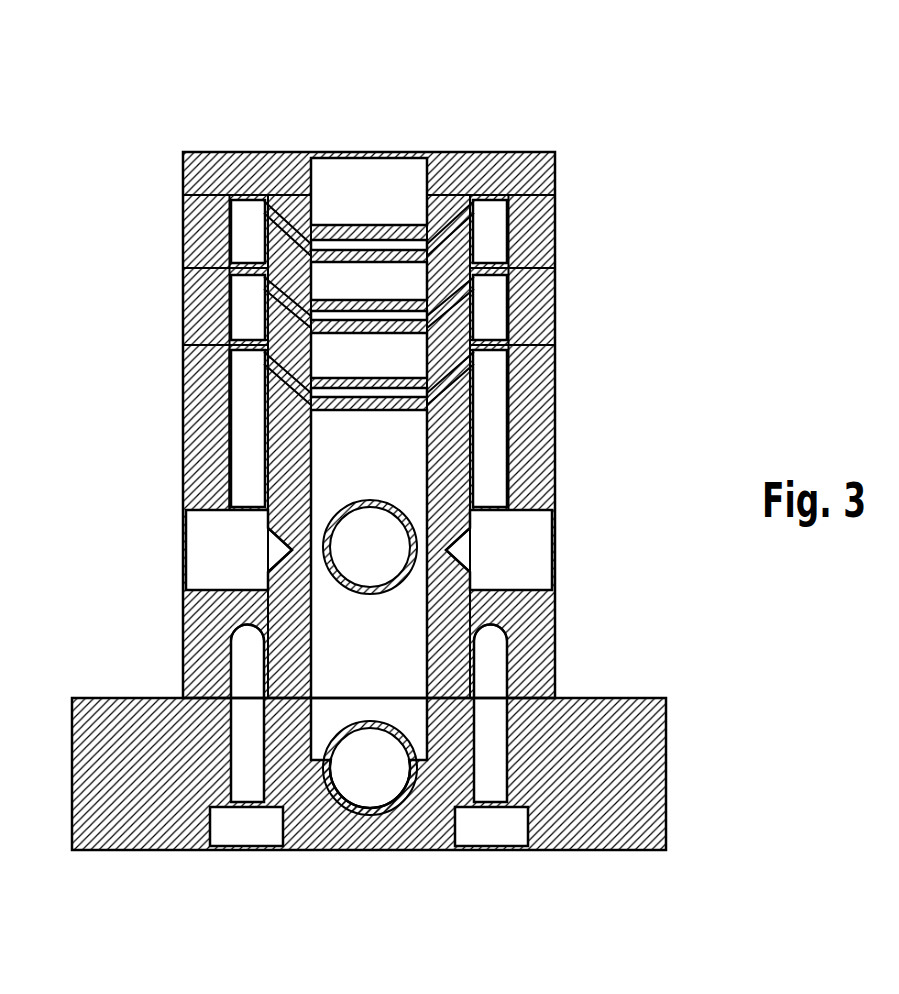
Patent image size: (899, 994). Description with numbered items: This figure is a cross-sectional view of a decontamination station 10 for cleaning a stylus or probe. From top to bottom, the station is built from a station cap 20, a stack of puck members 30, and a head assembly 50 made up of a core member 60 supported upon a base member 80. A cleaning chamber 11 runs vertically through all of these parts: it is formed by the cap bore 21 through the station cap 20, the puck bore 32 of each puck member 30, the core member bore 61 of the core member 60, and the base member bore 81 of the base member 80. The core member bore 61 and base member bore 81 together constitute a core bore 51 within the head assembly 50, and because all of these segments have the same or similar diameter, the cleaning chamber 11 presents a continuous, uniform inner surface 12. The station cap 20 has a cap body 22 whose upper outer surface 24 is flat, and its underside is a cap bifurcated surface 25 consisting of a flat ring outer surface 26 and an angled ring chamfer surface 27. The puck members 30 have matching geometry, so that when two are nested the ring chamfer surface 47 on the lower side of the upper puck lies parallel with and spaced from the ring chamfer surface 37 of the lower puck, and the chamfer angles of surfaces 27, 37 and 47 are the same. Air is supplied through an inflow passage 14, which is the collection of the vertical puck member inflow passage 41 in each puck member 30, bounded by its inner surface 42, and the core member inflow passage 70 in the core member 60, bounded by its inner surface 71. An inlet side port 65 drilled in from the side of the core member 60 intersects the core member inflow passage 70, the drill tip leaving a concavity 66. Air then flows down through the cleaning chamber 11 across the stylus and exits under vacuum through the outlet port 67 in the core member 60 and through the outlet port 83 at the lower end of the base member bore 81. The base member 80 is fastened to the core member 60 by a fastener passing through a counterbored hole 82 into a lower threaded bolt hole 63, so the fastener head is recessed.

The decontamination station 10 is at (620, 140).
The cleaning chamber 11 is at (392, 148).
The inner surface 12 is at (336, 172).
The inflow passage 14 is at (244, 203).
The station cap 20 is at (238, 146).
The cap bore 21 is at (402, 188).
The cap body 22 is at (453, 162).
The upper outer surface 24 is at (533, 155).
The cap bifurcated surface 25 is at (245, 247).
The ring outer surface 26 is at (490, 200).
The ring chamfer surface 27 is at (294, 236).
The puck member 30 is at (565, 223).
The puck bore 32 is at (405, 275).
The ring chamfer surface 37 is at (282, 214).
The puck member inflow passage 41 is at (230, 293).
The inner surface 42 is at (255, 322).
The ring chamfer surface 47 is at (285, 293).
The head assembly 50 is at (738, 620).
The core bore 51 is at (505, 671).
The core member 60 is at (570, 627).
The core member bore 61 is at (398, 445).
The lower threaded bolt hole 63 is at (247, 653).
The inlet side port 65 is at (205, 547).
The concavity 66 is at (268, 550).
The outlet port 67 is at (355, 570).
The core member inflow passage 70 is at (237, 420).
The inner surface 71 is at (253, 448).
The base member 80 is at (598, 684).
The base member bore 81 is at (405, 722).
The hole 82 is at (234, 830).
The outlet port 83 is at (362, 797).